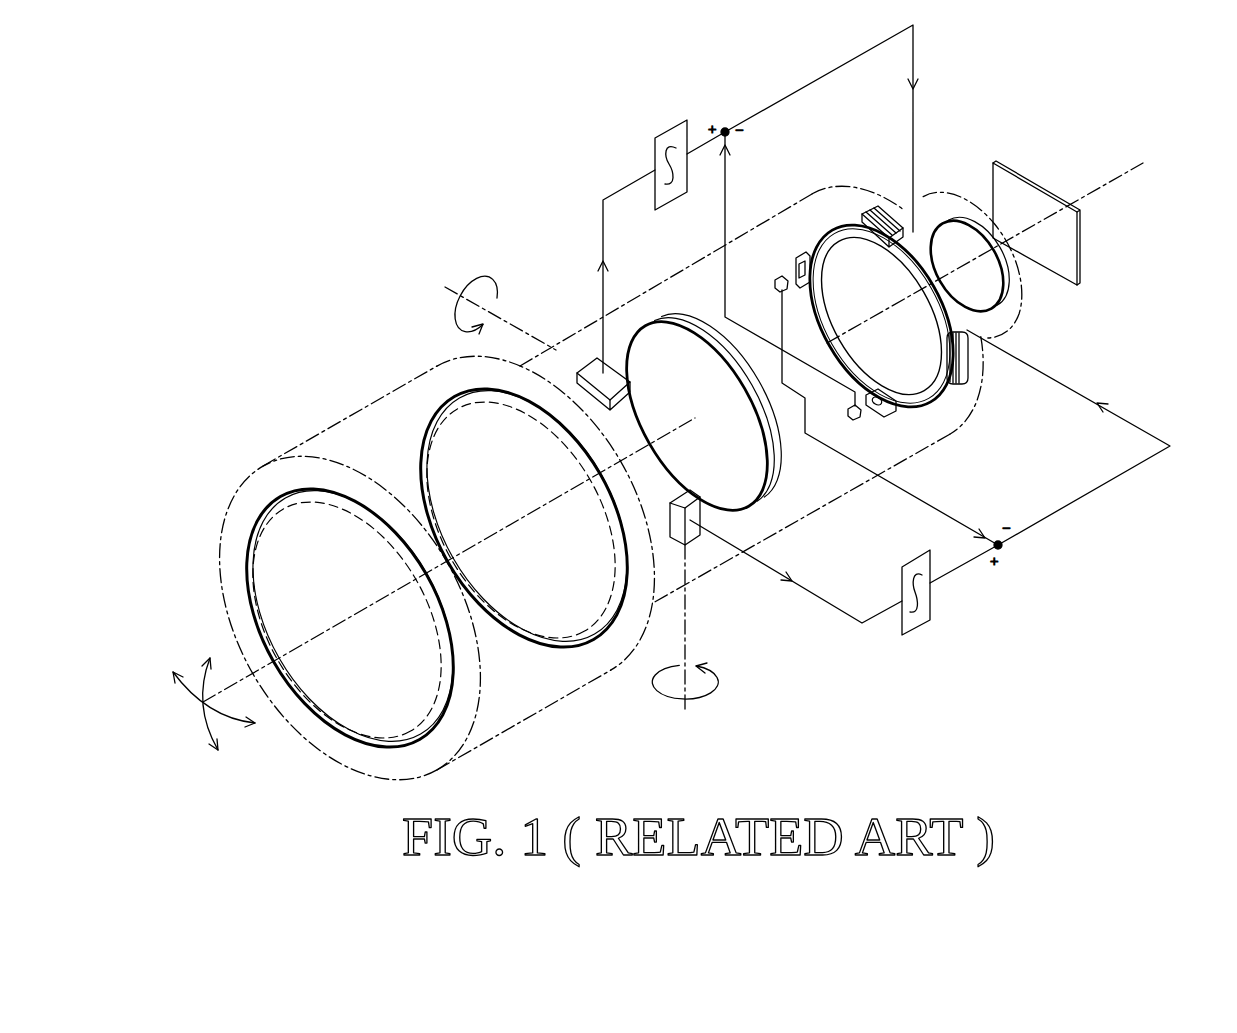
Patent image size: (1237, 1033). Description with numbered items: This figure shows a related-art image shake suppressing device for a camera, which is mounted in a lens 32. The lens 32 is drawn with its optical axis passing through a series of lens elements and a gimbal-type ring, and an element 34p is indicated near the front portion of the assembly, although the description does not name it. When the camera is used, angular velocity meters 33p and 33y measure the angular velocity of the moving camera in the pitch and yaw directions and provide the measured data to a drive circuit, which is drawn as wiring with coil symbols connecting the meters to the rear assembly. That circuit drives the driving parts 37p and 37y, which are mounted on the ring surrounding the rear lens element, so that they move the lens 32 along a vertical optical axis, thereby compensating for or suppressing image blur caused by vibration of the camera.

The lens 32 is at (553, 707).
The angular velocity meter 33p is at (593, 367).
The angular velocity meter 33y is at (693, 545).
The pitch rotation axis 34p is at (482, 277).
The driving part 37p is at (875, 217).
The driving part 37y is at (962, 360).